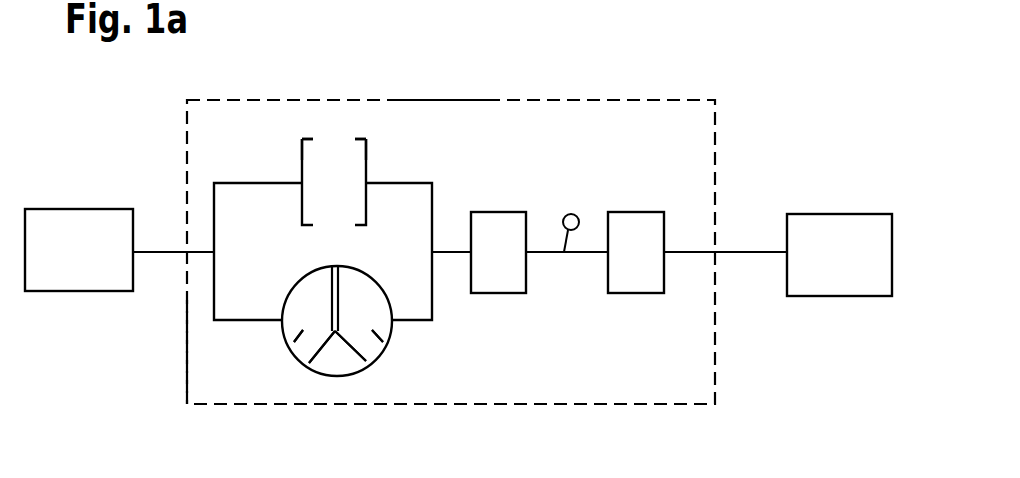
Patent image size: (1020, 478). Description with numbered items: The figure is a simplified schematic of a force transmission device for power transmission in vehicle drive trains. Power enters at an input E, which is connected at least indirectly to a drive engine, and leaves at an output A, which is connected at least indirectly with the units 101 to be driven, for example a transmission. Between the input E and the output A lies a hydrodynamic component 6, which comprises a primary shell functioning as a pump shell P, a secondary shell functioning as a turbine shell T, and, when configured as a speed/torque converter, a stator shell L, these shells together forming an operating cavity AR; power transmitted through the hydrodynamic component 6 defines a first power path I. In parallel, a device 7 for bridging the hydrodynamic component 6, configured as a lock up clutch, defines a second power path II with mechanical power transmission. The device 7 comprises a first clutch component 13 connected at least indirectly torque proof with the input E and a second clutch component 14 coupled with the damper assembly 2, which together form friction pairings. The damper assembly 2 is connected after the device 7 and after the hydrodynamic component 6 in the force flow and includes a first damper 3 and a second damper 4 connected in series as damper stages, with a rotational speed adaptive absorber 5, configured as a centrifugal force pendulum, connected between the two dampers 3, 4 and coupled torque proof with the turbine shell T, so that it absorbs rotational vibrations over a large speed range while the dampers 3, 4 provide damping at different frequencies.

The damper assembly 2 is at (603, 125).
The first damper 3 is at (500, 230).
The second damper 4 is at (640, 230).
The rotational speed adaptive absorber 5 is at (573, 213).
The hydrodynamic component 6 is at (345, 377).
The device for bridging the hydrodynamic component 7 is at (333, 128).
The first clutch component 13 is at (305, 137).
The second clutch component 14 is at (363, 135).
The output 101 is at (80, 228).
The input E is at (157, 248).
The output A is at (747, 250).
The first power path I is at (222, 378).
The second power path II is at (443, 125).
The pump shell P is at (287, 350).
The stator shell L is at (333, 352).
The turbine shell T is at (360, 350).
The operating cavity AR is at (380, 342).